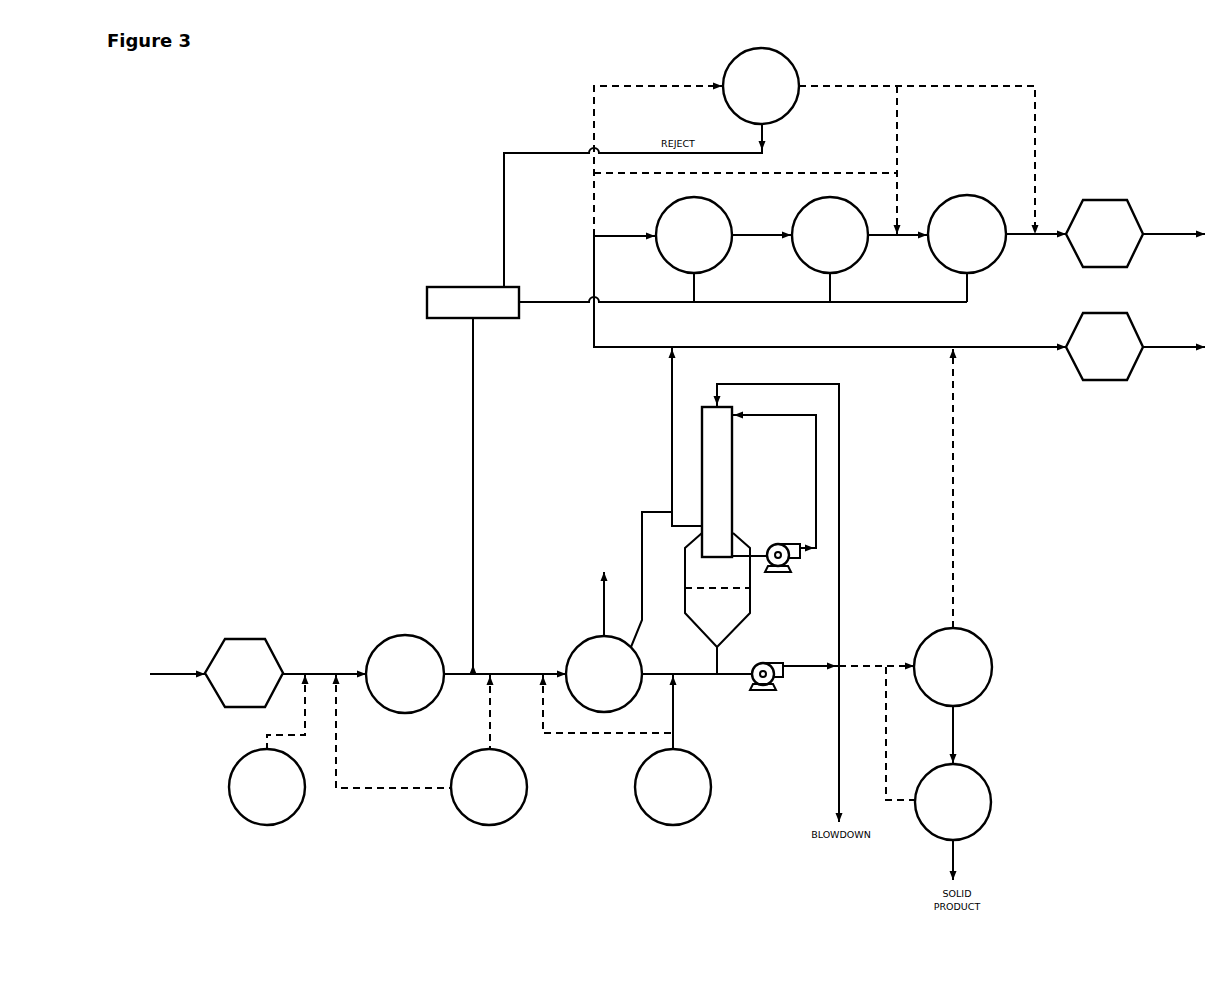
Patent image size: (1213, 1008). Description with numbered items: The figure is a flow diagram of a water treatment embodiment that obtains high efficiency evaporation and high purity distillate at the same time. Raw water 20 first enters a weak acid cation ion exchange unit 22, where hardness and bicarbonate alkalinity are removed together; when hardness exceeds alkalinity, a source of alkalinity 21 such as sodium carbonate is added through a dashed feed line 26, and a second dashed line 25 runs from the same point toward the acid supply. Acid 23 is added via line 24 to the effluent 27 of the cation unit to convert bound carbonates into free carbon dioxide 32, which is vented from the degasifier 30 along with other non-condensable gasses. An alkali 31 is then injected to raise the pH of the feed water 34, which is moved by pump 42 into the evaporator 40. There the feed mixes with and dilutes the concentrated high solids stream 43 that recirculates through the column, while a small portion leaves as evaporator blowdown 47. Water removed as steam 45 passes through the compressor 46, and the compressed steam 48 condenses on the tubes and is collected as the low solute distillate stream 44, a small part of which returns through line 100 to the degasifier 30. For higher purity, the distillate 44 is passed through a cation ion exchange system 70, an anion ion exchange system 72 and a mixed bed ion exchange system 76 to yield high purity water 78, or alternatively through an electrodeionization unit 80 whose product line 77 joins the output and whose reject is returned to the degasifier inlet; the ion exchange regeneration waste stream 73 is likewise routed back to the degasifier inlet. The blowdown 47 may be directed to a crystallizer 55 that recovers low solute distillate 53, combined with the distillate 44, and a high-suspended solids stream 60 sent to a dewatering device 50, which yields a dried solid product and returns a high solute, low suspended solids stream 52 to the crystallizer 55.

The raw water 20 is at (270, 646).
The source of alkalinity 21 is at (293, 758).
The weak acid cation ion exchange unit 22 is at (428, 638).
The acid 23 is at (525, 772).
The acid feed line 24 is at (490, 710).
The sodium carbonate feed line to acid 25 is at (337, 742).
The sodium carbonate feed line 26 is at (272, 734).
The effluent 27 is at (500, 673).
The degasifier 30 is at (640, 653).
The alkali 31 is at (709, 769).
The carbon dioxide 32 is at (606, 595).
The feed water 34 is at (682, 673).
The evaporator 40 is at (734, 445).
The pump 42 is at (768, 662).
The concentrated high solids stream 43 is at (840, 445).
The distillate stream 44 is at (615, 232).
The steam 45 is at (753, 536).
The compressor 46 is at (779, 542).
The evaporator blowdown 47 is at (840, 802).
The compressed steam 48 is at (779, 412).
The dewatering device 50 is at (984, 775).
The high solute/low suspended solids stream 52 is at (886, 743).
The low solute distillate 53 is at (959, 584).
The crystallizer 55 is at (982, 636).
The high-suspended solids stream 60 is at (957, 733).
The cation ion exchange system 70 is at (721, 207).
The anion ion exchange system 72 is at (854, 197).
The regeneration waste stream 73 is at (439, 286).
The mixed bed ion exchange system 76 is at (959, 195).
The EDI product line 77 is at (850, 85).
The high purity water 78 is at (1122, 200).
The electrodeionization unit 80 is at (797, 62).
The line 100 is at (644, 584).